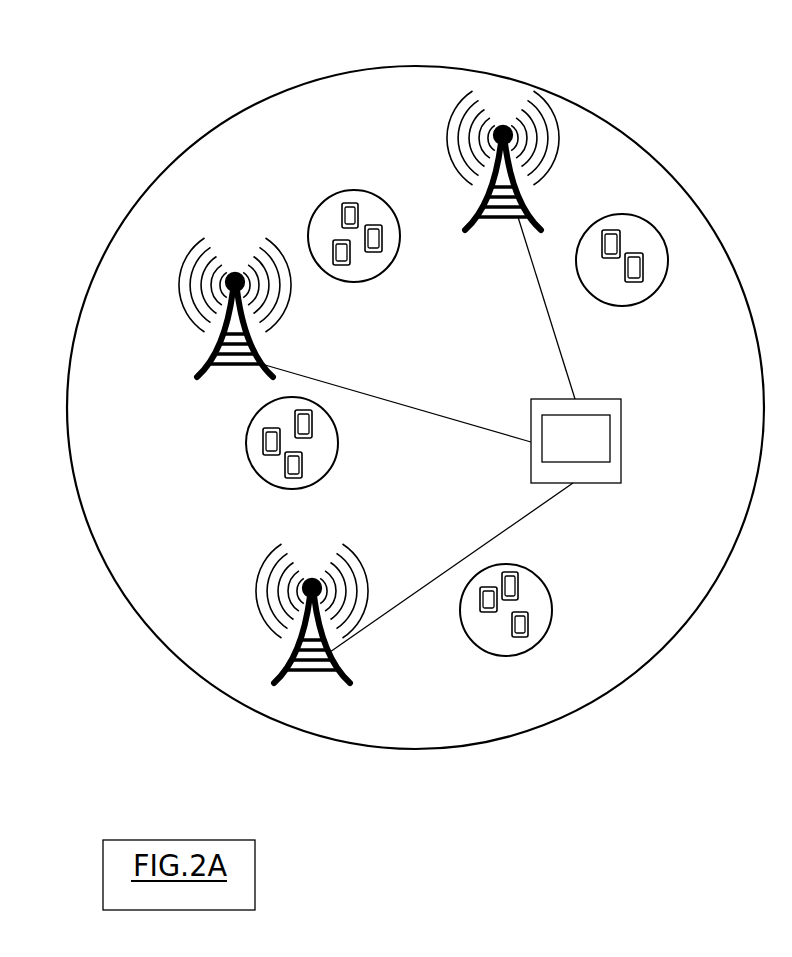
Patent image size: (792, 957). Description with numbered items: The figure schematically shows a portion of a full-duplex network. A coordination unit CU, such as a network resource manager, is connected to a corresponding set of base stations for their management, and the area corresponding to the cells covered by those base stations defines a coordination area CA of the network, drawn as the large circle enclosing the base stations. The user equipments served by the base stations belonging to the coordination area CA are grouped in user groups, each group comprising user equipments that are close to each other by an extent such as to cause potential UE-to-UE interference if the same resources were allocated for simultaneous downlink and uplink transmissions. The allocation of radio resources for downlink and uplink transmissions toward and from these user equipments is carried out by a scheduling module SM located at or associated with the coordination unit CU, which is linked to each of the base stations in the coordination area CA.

The coordination area CA is at (485, 742).
The scheduling module SM is at (590, 483).
The coordination unit CU is at (585, 486).